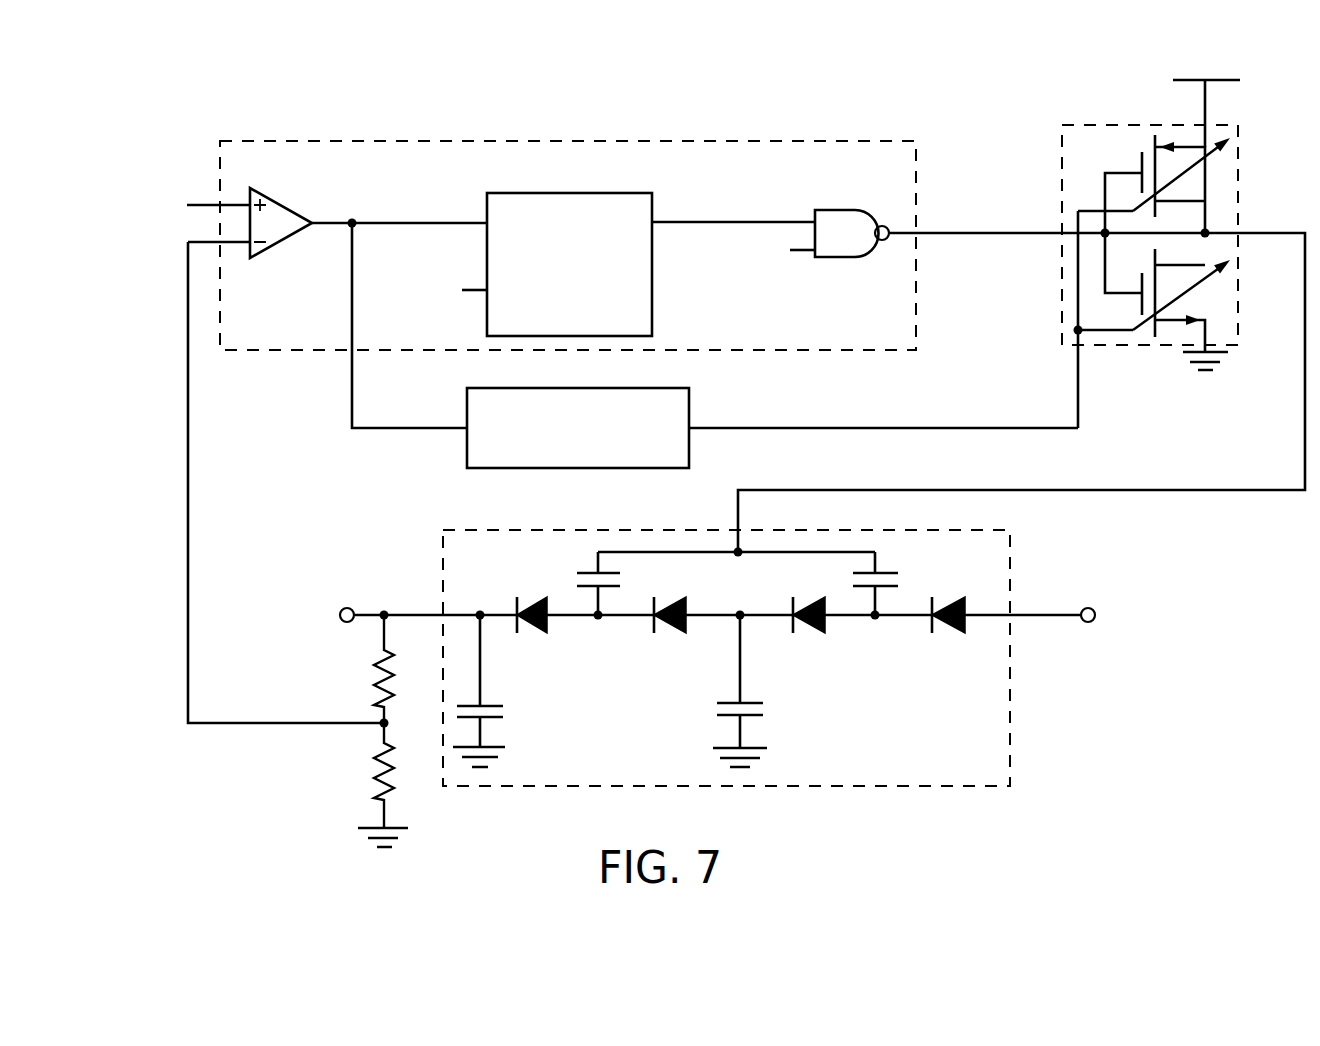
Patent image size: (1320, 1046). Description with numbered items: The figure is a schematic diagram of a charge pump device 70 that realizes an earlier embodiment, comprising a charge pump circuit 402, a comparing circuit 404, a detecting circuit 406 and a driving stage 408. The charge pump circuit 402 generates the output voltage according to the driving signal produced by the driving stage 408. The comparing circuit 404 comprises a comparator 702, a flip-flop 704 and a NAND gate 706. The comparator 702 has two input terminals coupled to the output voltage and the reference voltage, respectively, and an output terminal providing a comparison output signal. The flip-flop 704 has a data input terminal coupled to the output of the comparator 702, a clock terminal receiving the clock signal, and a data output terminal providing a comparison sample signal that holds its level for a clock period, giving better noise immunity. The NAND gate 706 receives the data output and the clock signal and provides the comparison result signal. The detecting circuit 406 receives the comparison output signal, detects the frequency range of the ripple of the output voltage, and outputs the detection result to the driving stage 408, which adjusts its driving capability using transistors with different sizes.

The charge pump device 70 is at (237, 110).
The charge pump circuit 402 is at (1010, 568).
The comparing circuit 404 is at (873, 140).
The detecting circuit 406 is at (662, 388).
The driving stage 408 is at (1237, 163).
The comparator 702 is at (278, 203).
The flip-flop 704 is at (598, 193).
The NAND gate 706 is at (833, 208).